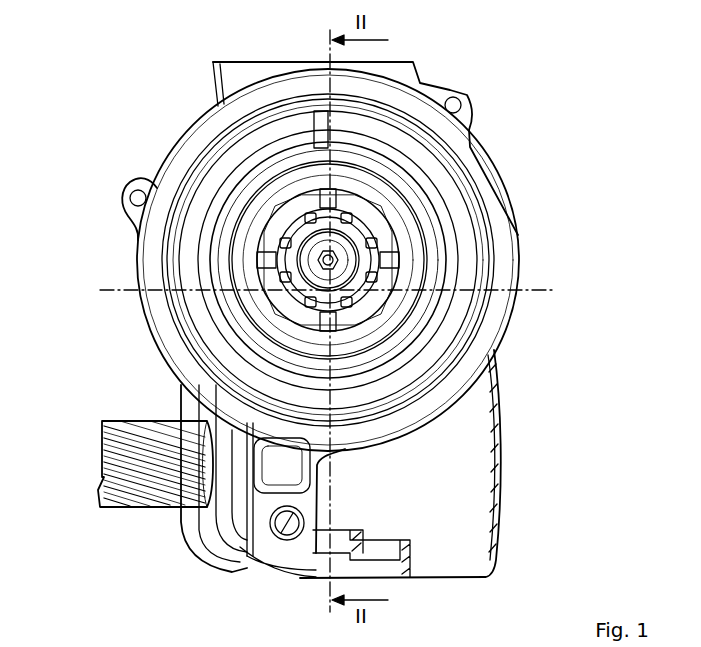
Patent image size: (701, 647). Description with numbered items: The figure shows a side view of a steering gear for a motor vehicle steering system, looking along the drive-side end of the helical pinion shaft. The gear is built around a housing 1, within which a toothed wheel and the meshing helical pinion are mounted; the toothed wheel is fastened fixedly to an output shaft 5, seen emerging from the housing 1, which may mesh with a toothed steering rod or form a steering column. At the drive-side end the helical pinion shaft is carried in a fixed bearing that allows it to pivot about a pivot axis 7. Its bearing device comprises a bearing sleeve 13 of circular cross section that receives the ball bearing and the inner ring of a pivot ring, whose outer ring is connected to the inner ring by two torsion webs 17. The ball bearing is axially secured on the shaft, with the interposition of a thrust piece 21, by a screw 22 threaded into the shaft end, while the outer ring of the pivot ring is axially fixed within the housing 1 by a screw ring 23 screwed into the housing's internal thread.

The housing 1 is at (470, 148).
The output shaft 5 is at (100, 455).
The pivot axis 7 is at (556, 290).
The bearing sleeve 13 is at (260, 198).
The torsion webs 17 is at (264, 288).
The thrust piece 21 is at (280, 247).
The screw 22 is at (320, 270).
The screw ring 23 is at (307, 203).